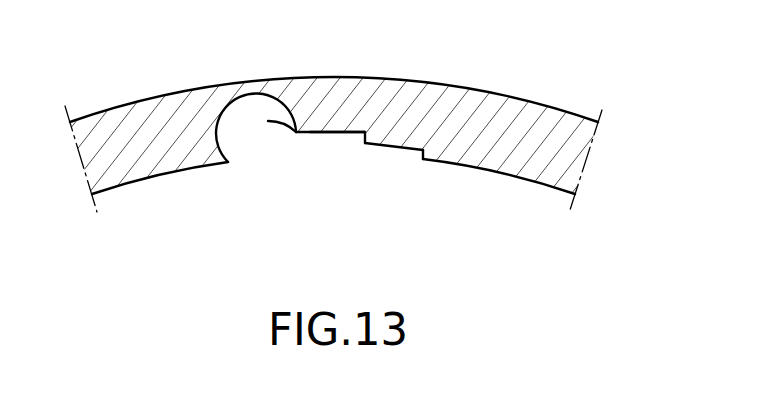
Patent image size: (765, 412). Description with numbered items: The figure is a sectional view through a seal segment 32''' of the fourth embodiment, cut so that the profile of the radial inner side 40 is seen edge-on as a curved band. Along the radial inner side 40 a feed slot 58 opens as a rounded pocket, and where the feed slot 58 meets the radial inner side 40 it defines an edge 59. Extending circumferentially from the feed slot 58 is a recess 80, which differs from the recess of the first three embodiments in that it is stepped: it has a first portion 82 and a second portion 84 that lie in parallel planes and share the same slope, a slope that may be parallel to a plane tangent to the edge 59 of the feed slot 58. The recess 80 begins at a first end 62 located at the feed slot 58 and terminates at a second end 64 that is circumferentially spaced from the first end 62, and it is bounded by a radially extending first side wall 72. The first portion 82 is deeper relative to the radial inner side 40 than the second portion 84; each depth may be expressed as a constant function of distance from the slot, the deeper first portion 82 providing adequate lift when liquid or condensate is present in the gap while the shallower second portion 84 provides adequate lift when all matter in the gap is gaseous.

The seal segment 32''' is at (372, 136).
The radial inner side 40 is at (512, 176).
The axial edge 59 is at (229, 162).
The feed slot 58 is at (242, 145).
The first end 62 is at (297, 131).
The first side wall 72 is at (303, 138).
The first portion 82 is at (335, 133).
The second portion 84 is at (383, 148).
The second end 64 is at (423, 157).
The recess 80 is at (408, 190).